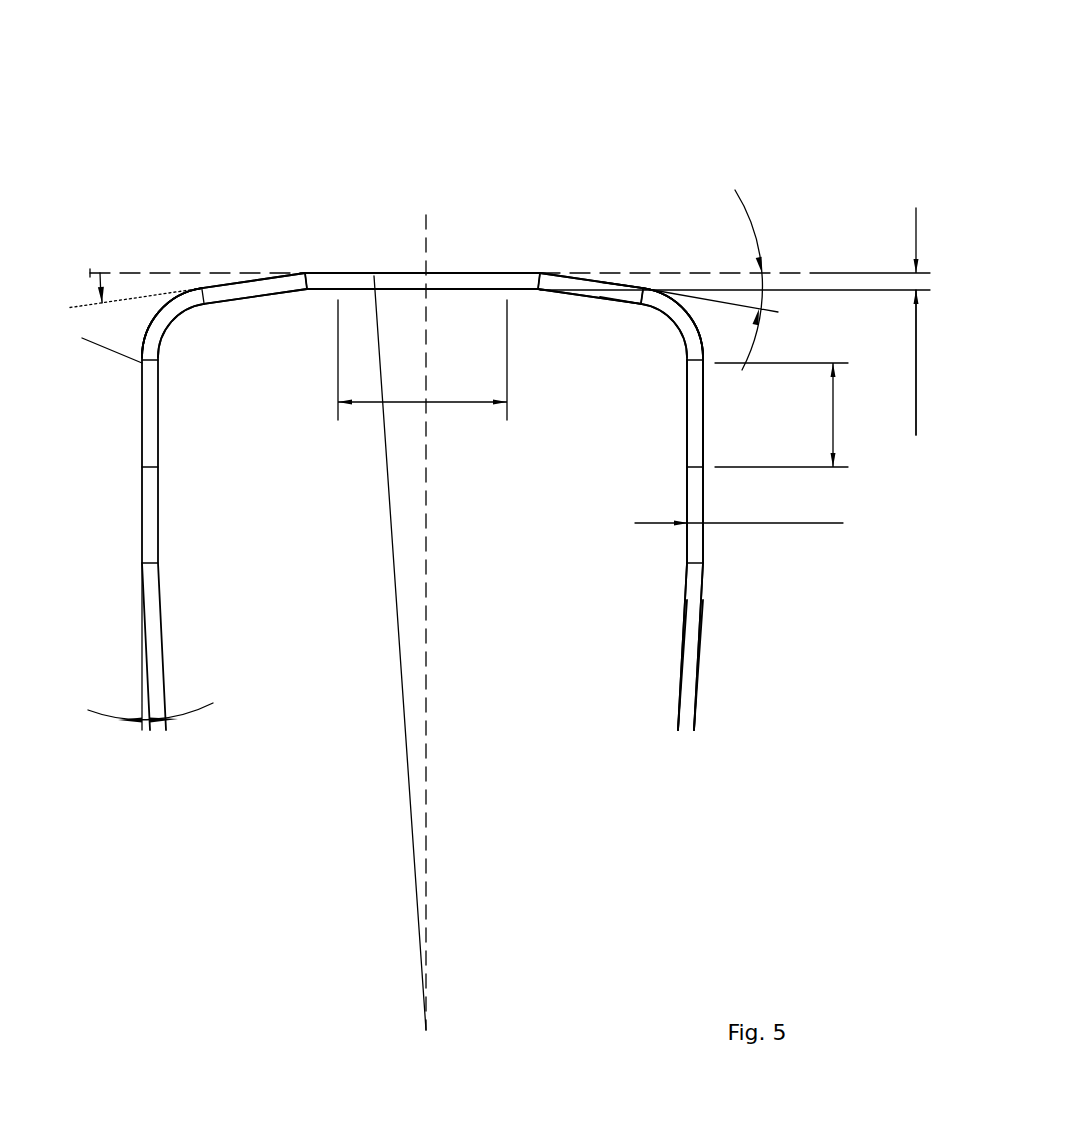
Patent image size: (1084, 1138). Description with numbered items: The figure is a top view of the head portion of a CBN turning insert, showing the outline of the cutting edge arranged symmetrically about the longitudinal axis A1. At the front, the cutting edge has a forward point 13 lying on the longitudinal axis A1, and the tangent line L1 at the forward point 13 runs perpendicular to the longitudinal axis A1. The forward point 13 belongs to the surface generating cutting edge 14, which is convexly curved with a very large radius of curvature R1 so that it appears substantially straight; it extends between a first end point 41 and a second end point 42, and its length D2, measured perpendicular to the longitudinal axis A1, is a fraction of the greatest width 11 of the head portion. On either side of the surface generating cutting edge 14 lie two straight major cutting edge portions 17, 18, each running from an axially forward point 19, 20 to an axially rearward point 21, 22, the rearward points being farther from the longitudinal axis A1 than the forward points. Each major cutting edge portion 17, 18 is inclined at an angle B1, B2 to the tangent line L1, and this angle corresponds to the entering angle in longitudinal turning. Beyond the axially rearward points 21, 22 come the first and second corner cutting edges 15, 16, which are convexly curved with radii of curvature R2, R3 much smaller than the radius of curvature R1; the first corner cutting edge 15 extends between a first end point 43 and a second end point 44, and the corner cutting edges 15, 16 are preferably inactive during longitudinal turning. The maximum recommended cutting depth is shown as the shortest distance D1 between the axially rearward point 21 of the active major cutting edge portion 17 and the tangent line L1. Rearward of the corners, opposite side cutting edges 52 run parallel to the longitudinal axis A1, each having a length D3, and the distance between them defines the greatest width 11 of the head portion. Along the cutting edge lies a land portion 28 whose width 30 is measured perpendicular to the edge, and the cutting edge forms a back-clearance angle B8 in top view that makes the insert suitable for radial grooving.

The greatest width of the head portion 11 is at (687, 411).
The forward point 13 is at (425, 273).
The surface generating cutting edge 14 is at (450, 272).
The first corner cutting edge 15 is at (661, 293).
The second corner cutting edge 16 is at (154, 319).
The first major cutting edge portion 17 is at (596, 281).
The second major cutting edge portion 18 is at (247, 281).
The axially forward point of the first major cutting edge portion 19 is at (510, 535).
The axially forward point of the second major cutting edge portion 20 is at (302, 275).
The axially rearward point of the first major cutting edge portion 21 is at (642, 287).
The axially rearward point of the second major cutting edge portion 22 is at (203, 301).
The land portion 28 is at (692, 592).
The width of the land portion 30 is at (575, 678).
The first end point of the surface generating cutting edge 41 is at (507, 272).
The second end point of the surface generating cutting edge 42 is at (337, 279).
The first end point of the first corner cutting edge 43 is at (640, 302).
The second end point of the first corner cutting edge 44 is at (704, 362).
The side cutting edges 52 is at (704, 402).
The longitudinal axis A1 is at (431, 603).
The radius of curvature of the surface generating cutting edge R1 is at (379, 292).
The radius of curvature of the first corner cutting edge R2 is at (662, 310).
The radius of curvature of the second corner cutting edge R3 is at (162, 341).
The tangent line L1 is at (527, 321).
The maximum recommended cutting depth D1 is at (936, 362).
The length of the surface generating cutting edge D2 is at (422, 360).
The length of the side cutting edge D3 is at (757, 444).
The angle of the first major cutting edge portion B1 is at (730, 280).
The angle of the second major cutting edge portion B2 is at (121, 290).
The back-clearance angle B8 is at (138, 646).